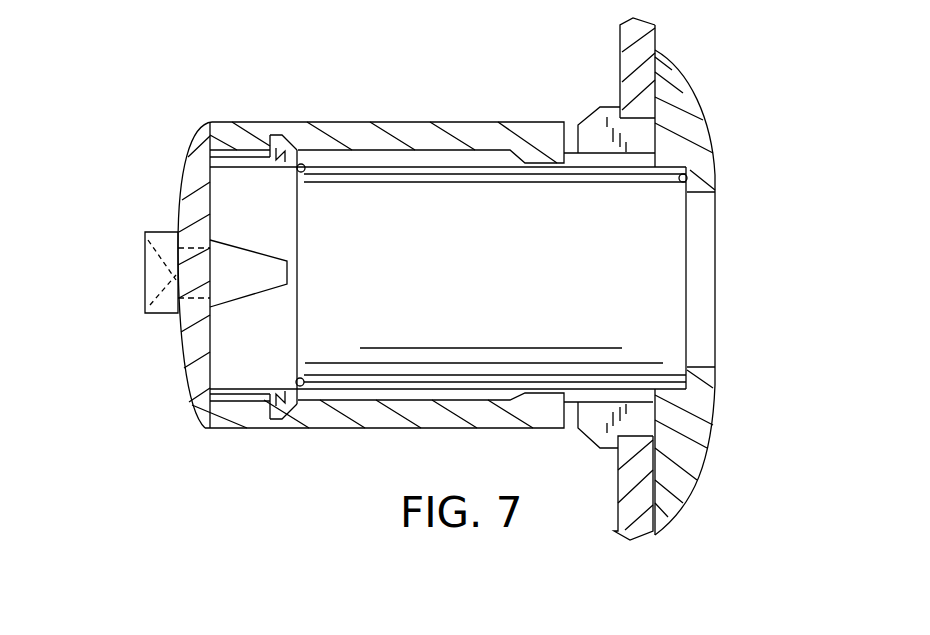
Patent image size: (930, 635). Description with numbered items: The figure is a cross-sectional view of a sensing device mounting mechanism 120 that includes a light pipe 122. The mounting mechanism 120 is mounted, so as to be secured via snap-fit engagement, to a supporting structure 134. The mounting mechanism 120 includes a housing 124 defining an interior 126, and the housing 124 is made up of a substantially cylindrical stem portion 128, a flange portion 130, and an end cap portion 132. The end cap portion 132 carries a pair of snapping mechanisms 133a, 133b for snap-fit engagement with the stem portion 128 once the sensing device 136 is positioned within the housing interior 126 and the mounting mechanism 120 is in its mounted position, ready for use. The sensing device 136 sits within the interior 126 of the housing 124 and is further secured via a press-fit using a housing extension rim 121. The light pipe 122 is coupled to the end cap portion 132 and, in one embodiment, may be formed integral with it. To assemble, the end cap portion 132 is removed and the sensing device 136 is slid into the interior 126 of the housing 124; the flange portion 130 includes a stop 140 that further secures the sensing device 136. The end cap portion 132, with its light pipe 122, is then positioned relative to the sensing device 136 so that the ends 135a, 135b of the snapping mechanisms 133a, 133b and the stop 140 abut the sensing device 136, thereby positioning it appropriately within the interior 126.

The sensing device mounting mechanism 120 is at (150, 138).
The housing extension rim 121 is at (530, 170).
The light pipe 122 is at (144, 265).
The housing 124 is at (403, 120).
The interior 126 is at (268, 214).
The stem portion 128 is at (352, 138).
The flange portion 130 is at (700, 129).
The end cap portion 132 is at (180, 339).
The snapping mechanism 133a is at (270, 147).
The snapping mechanism 133b is at (282, 416).
The supporting structure 134 is at (633, 47).
The end of snapping mechanism 135a is at (296, 171).
The end of snapping mechanism 135b is at (298, 380).
The sensing device 136 is at (505, 287).
The stop 140 is at (690, 177).